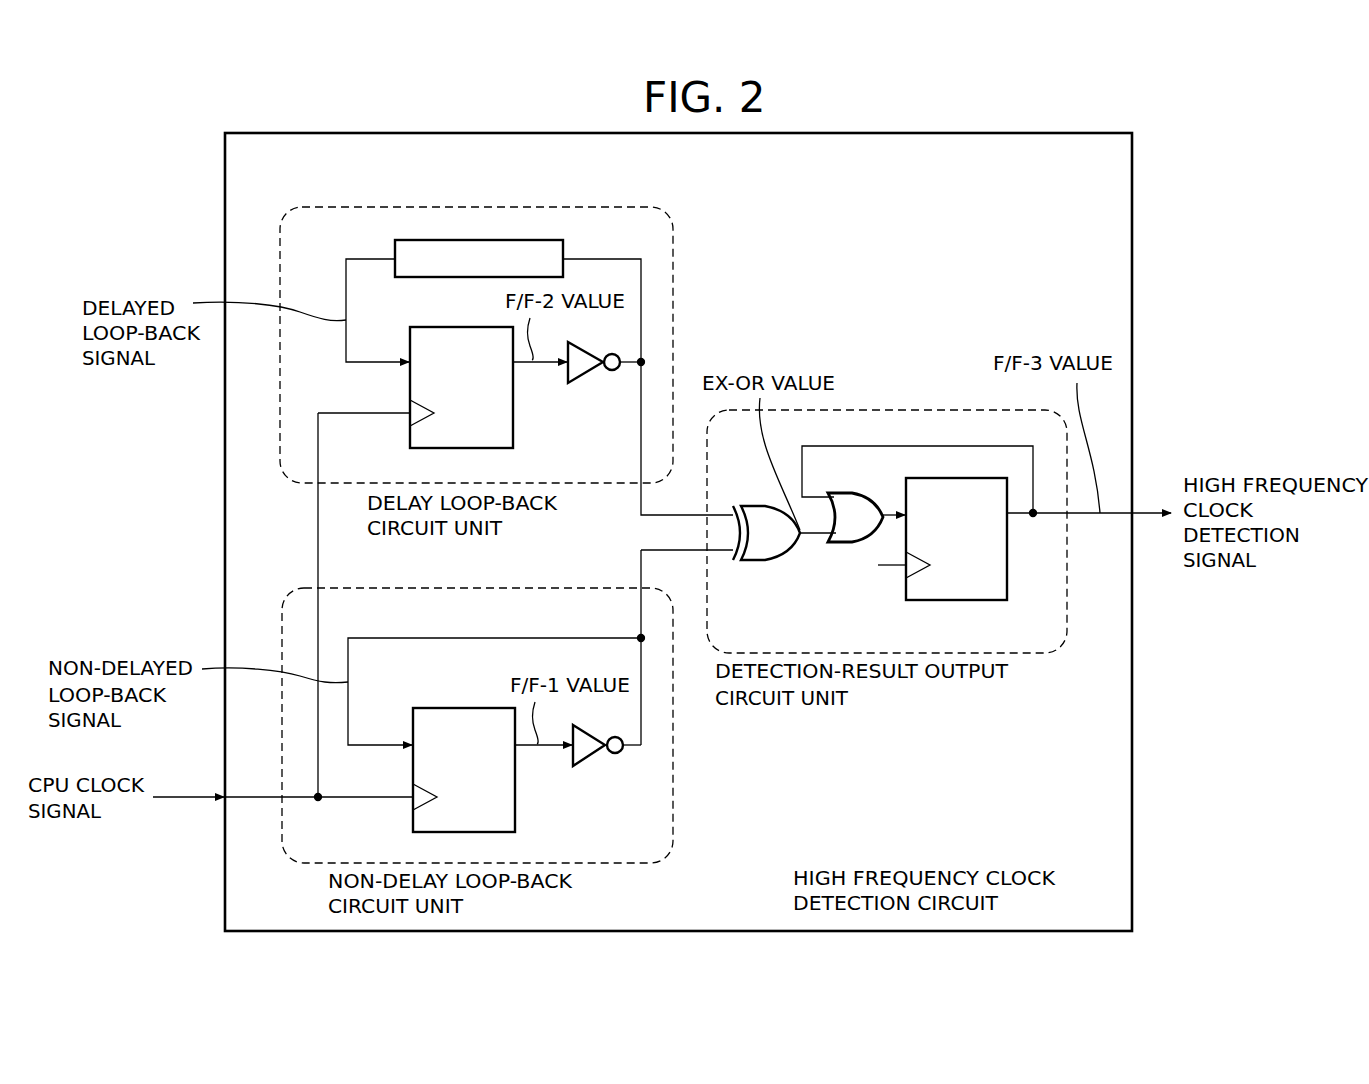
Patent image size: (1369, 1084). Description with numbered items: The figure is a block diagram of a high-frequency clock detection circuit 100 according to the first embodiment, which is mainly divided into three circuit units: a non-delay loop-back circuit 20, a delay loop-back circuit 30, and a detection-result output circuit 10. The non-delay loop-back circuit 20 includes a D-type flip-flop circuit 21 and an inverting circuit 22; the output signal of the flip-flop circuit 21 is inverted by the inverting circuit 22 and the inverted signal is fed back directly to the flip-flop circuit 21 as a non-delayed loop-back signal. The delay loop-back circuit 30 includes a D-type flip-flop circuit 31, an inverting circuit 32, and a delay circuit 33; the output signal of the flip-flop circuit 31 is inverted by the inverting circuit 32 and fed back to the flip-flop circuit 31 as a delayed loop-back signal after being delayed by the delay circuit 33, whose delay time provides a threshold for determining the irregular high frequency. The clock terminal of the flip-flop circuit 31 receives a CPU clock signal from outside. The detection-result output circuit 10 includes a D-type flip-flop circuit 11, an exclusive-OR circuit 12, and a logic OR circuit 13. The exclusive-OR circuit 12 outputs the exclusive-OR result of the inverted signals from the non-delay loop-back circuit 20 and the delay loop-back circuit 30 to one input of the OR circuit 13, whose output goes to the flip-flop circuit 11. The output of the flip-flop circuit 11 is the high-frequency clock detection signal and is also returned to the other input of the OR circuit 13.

The high-frequency clock detection circuit 100 is at (1133, 880).
The detection-result output circuit 10 is at (1032, 653).
The flip-flop circuit 11 is at (950, 600).
The exclusive-OR circuit 12 is at (760, 560).
The logic OR circuit 13 is at (845, 542).
The non-delay loop-back circuit 20 is at (595, 863).
The flip-flop circuit 21 is at (515, 808).
The inverting circuit 22 is at (590, 763).
The delay loop-back circuit 30 is at (595, 483).
The flip-flop circuit 31 is at (513, 420).
The inverting circuit 32 is at (585, 378).
The delay circuit 33 is at (395, 250).